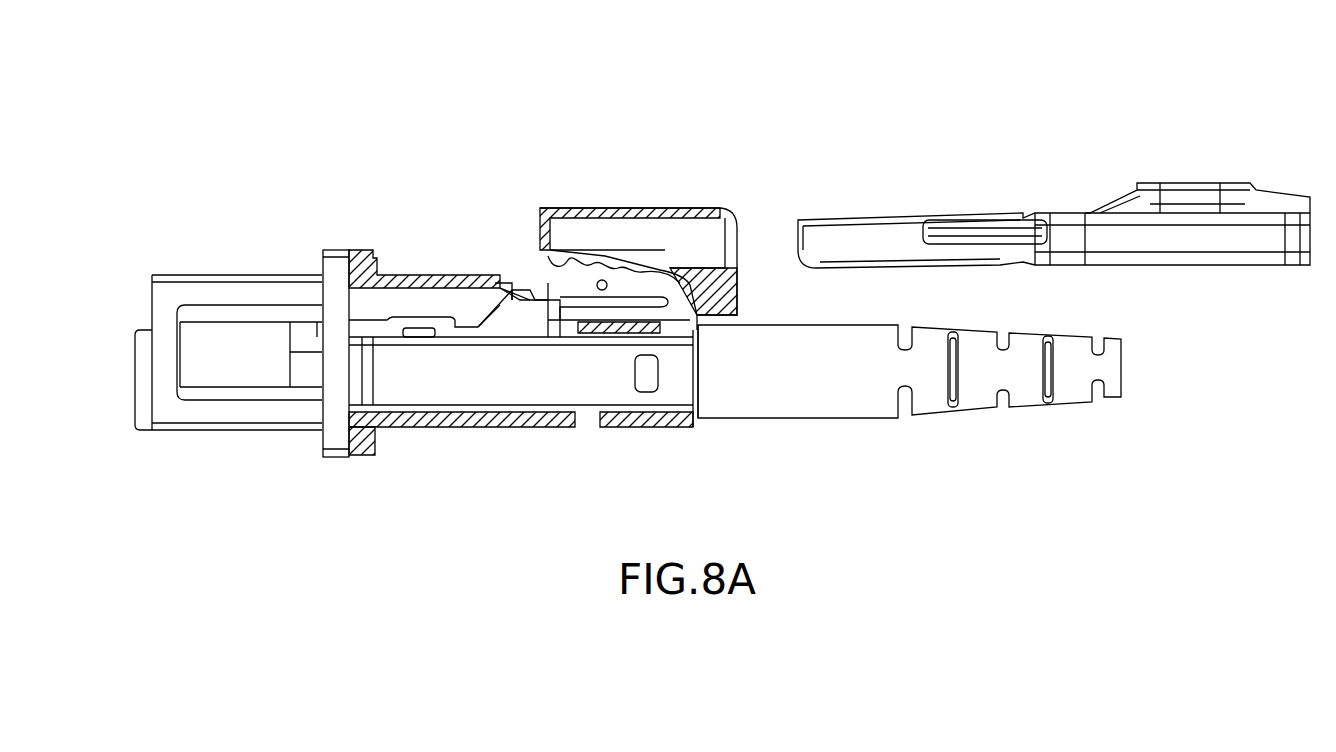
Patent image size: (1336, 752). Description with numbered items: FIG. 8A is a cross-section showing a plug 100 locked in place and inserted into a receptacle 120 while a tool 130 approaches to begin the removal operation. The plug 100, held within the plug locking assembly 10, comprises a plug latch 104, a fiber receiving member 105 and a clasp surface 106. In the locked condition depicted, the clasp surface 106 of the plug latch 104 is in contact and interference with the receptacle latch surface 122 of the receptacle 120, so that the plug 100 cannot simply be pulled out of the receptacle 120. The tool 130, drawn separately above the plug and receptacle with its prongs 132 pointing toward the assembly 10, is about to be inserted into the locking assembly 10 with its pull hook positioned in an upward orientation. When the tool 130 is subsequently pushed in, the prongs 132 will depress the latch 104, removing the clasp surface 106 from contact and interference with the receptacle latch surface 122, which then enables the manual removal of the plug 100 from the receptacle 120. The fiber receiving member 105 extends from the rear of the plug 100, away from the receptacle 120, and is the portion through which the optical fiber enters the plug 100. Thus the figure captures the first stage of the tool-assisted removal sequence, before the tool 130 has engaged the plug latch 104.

The plug locking assembly 10 is at (632, 178).
The plug 100 is at (748, 458).
The plug latch 104 is at (548, 283).
The fiber receiving member 105 is at (1030, 383).
The clasp surface 106 is at (510, 300).
The receptacle 120 is at (282, 244).
The receptacle latch surface 122 is at (532, 284).
The tool 130 is at (1142, 150).
The prong 132 is at (856, 240).